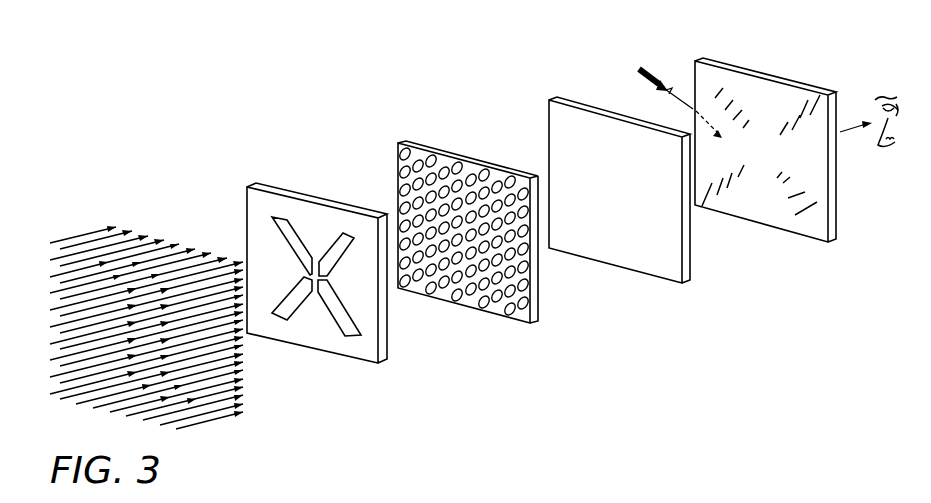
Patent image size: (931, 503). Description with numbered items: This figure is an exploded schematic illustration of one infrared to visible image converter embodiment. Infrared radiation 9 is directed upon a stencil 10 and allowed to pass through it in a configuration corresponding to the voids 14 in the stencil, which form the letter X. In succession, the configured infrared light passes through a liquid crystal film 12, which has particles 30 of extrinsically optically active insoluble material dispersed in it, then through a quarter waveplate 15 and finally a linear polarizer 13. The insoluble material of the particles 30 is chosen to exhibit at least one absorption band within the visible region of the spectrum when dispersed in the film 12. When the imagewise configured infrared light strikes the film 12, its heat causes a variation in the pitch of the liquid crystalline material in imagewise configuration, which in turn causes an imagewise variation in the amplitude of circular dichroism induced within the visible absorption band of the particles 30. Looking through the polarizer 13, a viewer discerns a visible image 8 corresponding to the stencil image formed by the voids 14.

The infrared radiation 9 is at (63, 241).
The stencil 10 is at (260, 186).
The voids 14 is at (285, 297).
The liquid crystal film 12 is at (408, 143).
The particles 30 is at (398, 177).
The quarter waveplate 15 is at (558, 94).
The visible image 8 is at (672, 66).
The linear polarizer 13 is at (705, 58).